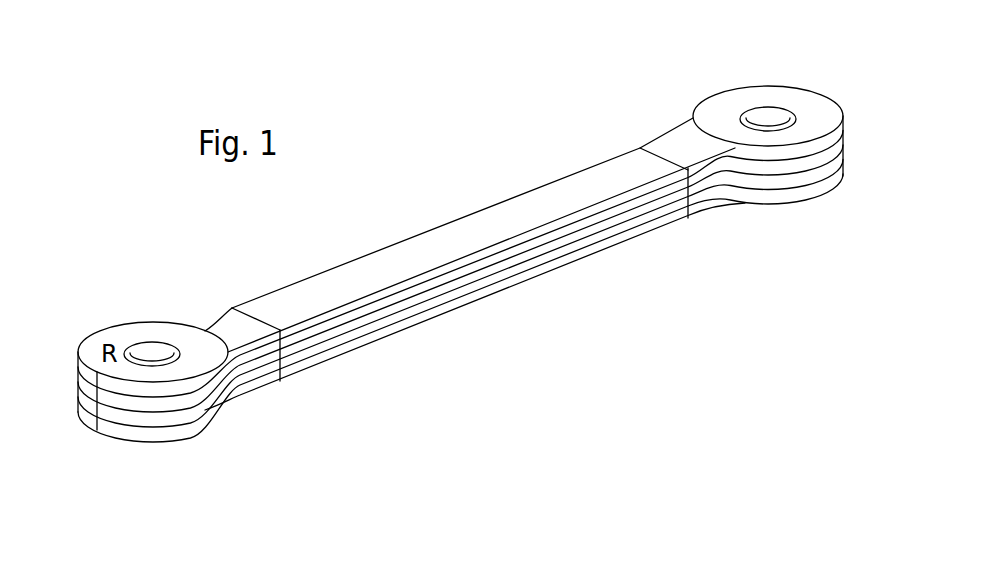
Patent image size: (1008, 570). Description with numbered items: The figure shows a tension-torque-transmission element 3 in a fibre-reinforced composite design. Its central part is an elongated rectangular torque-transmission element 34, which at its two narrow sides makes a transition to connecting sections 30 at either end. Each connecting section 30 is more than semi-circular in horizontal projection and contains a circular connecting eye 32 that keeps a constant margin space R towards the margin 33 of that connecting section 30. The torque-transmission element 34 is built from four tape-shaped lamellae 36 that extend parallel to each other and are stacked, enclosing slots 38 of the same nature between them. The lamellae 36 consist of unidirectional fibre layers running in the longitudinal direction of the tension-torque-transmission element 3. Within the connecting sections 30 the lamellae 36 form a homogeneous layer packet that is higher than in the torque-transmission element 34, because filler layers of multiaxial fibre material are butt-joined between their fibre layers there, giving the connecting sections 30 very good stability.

The tension-torque-transmission element 3 is at (472, 143).
The connecting section 30 is at (102, 326).
The connecting eye 32 is at (149, 337).
The margin 33 is at (103, 369).
The torque-transmission element 34 is at (445, 236).
The lamella 36 is at (385, 332).
The slot 38 is at (597, 251).